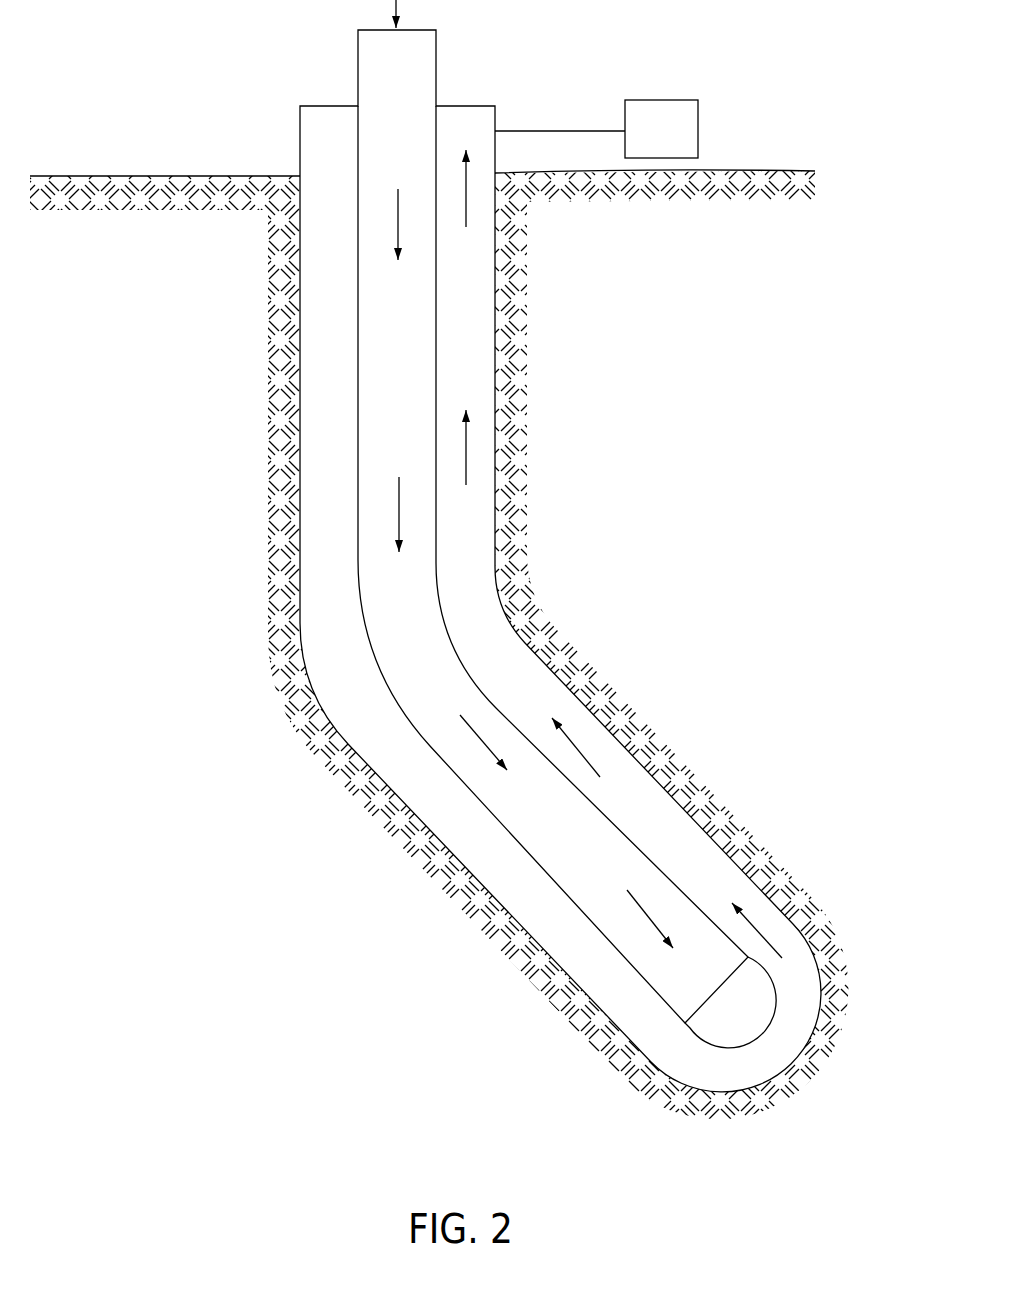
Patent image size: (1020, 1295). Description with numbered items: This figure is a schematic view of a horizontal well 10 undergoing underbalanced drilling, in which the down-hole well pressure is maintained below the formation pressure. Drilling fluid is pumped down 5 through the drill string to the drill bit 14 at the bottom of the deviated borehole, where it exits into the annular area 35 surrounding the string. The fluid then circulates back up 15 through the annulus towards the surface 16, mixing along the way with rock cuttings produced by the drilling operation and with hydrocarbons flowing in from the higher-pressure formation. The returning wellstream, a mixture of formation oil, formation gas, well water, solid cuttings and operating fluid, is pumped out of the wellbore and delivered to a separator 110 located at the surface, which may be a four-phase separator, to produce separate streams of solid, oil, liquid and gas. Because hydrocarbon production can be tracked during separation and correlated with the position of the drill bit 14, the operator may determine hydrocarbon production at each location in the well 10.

The drilling fluid pumped down 5 is at (398, 215).
The horizontal well 10 is at (282, 381).
The drill bit 14 is at (717, 1025).
The drilling fluid circulating back up 15 is at (467, 460).
The surface 16 is at (106, 176).
The annular area 35 is at (640, 790).
The separator 110 is at (596, 129).